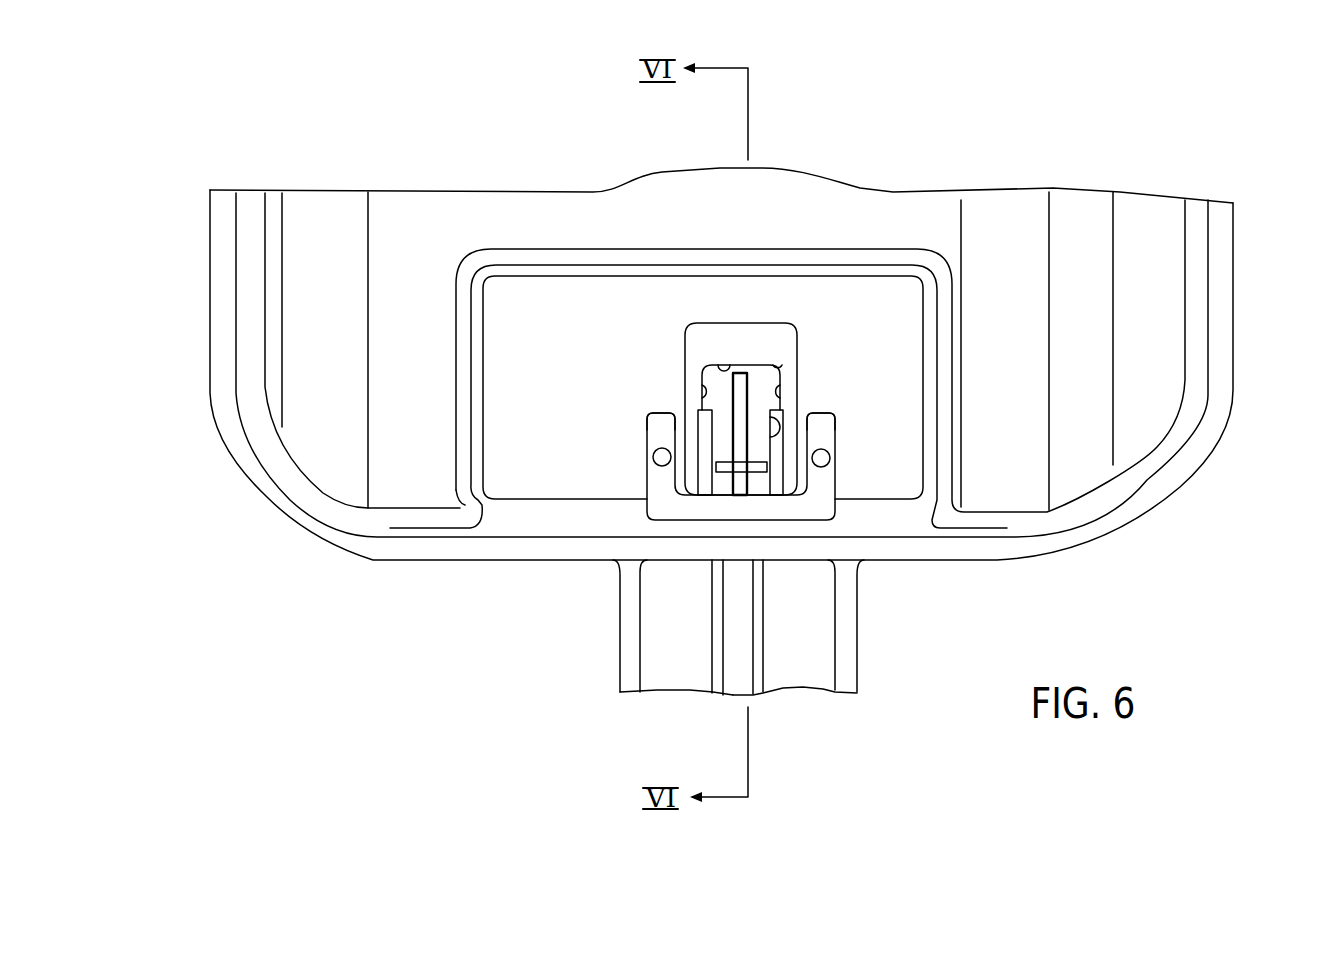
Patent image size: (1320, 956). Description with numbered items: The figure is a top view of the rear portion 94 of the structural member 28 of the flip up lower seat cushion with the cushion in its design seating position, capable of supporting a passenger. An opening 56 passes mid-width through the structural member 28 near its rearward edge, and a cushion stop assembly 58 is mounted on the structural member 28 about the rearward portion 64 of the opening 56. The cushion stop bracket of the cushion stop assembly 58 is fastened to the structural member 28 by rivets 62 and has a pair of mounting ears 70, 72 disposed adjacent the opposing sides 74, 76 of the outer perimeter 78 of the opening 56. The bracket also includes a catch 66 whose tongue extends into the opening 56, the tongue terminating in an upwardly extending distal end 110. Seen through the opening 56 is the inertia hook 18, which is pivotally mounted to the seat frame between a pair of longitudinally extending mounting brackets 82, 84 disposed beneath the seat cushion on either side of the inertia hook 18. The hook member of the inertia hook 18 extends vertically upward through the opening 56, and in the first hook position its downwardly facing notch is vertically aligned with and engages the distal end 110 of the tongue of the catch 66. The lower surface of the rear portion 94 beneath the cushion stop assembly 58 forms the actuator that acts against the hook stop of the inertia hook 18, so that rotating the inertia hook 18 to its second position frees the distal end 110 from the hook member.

The structural member 28 is at (1140, 430).
The rear portion 94 is at (528, 522).
The cushion stop assembly 58 is at (827, 483).
The mounting ear 70 is at (823, 428).
The mounting ear 72 is at (657, 482).
The rivets 62 is at (660, 456).
The opening 56 is at (778, 372).
The inertia hook 18 is at (745, 383).
The rearward portion 64 is at (777, 420).
The opposing side 74 is at (772, 388).
The opposing side 76 is at (710, 388).
The outer perimeter 78 is at (730, 376).
The distal end of the tongue 110 is at (753, 475).
The catch 66 is at (727, 478).
The mounting bracket 84 is at (665, 667).
The mounting bracket 82 is at (807, 675).